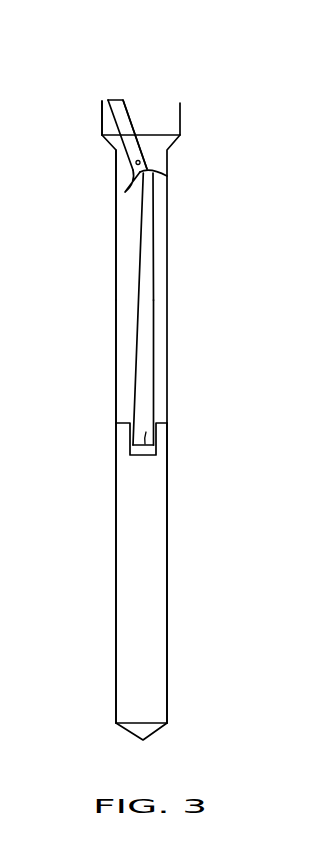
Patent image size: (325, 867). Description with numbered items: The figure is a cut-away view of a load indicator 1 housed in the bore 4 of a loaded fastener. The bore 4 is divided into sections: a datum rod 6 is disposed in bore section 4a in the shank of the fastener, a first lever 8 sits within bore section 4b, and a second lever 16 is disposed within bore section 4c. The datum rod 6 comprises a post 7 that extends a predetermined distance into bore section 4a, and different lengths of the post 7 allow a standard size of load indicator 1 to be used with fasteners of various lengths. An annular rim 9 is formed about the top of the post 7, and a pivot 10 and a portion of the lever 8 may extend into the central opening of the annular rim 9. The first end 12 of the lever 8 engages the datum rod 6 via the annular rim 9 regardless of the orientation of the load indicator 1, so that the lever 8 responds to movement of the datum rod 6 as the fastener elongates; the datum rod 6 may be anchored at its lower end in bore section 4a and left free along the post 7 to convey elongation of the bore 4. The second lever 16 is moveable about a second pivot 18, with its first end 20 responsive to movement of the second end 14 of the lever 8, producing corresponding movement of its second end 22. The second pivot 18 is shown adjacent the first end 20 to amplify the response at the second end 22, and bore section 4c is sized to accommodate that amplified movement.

The load indicator 1 is at (95, 72).
The bore 4 is at (123, 222).
The bore section 4a is at (128, 592).
The bore section 4b is at (125, 307).
The bore section 4c is at (102, 120).
The datum rod 6 is at (160, 623).
The post 7 is at (160, 692).
The first lever 8 is at (148, 337).
The annular rim 9 is at (125, 440).
The pivot 10 is at (151, 443).
The first end 12 is at (154, 425).
The second end 14 is at (152, 200).
The second lever 16 is at (130, 120).
The second pivot 18 is at (129, 172).
The first end 20 is at (147, 166).
The second end 22 is at (110, 100).